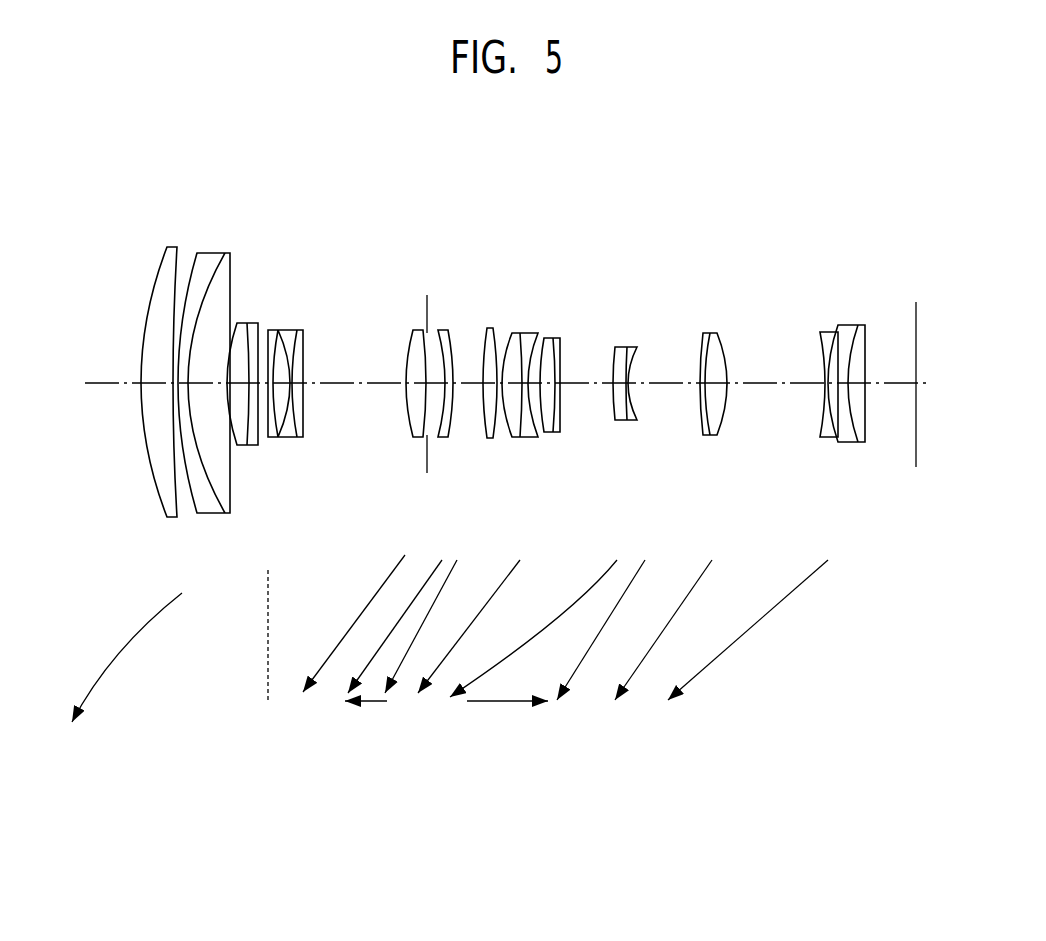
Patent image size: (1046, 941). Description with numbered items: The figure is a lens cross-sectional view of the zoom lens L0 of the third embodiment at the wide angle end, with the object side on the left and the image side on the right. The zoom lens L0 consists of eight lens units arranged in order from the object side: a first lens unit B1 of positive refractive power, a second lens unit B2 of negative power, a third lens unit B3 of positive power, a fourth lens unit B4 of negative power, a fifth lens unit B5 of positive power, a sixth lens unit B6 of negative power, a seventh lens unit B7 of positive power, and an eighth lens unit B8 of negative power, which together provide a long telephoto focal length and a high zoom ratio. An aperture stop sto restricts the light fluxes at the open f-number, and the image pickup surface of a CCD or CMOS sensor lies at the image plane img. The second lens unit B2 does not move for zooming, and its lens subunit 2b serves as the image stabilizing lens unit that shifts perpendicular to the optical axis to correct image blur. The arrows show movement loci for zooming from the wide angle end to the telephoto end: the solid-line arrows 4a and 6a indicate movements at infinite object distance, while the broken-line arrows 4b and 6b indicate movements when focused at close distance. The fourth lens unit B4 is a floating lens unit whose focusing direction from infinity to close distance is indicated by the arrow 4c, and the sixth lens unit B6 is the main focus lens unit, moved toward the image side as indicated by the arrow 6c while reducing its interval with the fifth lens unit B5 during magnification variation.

The zoom lens L0 is at (868, 243).
The first lens unit B1 is at (233, 533).
The second lens unit B2 is at (267, 491).
The lens subunit 2b is at (305, 318).
The third lens unit B3 is at (433, 493).
The fourth lens unit B4 is at (462, 493).
The fifth lens unit B5 is at (572, 493).
The sixth lens unit B6 is at (648, 493).
The seventh lens unit B7 is at (735, 493).
The eighth lens unit B8 is at (883, 493).
The aperture stop sto is at (430, 310).
The image plane img is at (915, 328).
The solid-line arrow 4a is at (422, 643).
The broken-line arrow 4b is at (378, 661).
The arrow 4c is at (367, 701).
The solid-line arrow 6a is at (542, 627).
The broken-line arrow 6b is at (587, 660).
The arrow 6c is at (517, 701).